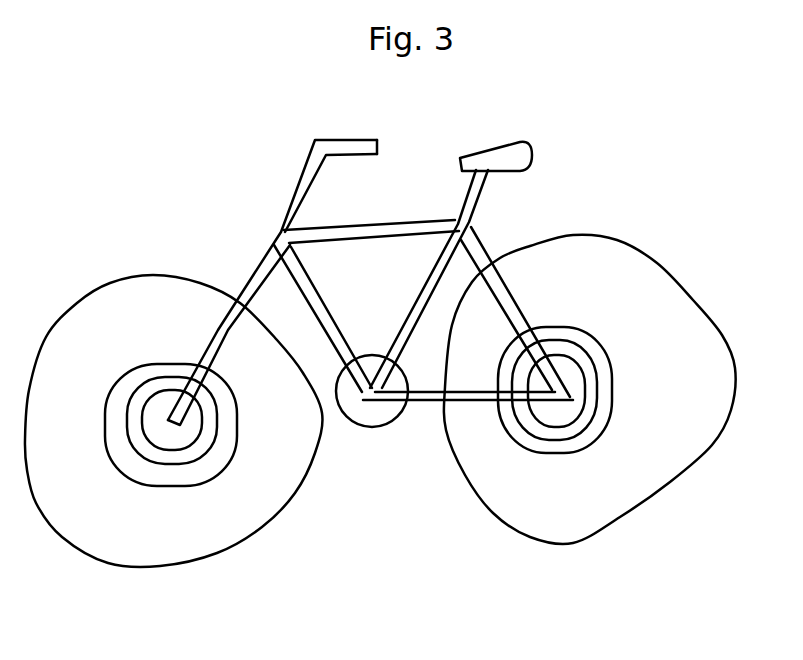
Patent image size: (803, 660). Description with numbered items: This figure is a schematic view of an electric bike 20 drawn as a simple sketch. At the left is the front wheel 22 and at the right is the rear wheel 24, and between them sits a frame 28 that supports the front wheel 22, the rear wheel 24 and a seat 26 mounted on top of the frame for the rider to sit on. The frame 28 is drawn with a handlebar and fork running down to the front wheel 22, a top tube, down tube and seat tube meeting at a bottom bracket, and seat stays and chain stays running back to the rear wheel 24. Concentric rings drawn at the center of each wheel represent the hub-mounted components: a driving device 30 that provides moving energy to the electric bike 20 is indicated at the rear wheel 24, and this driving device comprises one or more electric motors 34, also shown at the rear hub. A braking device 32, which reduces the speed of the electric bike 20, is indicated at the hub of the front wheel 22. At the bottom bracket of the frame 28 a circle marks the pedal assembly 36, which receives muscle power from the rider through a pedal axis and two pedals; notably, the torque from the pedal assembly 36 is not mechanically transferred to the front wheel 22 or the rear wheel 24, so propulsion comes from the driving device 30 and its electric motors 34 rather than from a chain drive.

The electric bike 20 is at (645, 98).
The front wheel 22 is at (192, 557).
The rear wheel 24 is at (602, 530).
The seat 26 is at (500, 145).
The frame 28 is at (332, 358).
The driving device 30 is at (583, 350).
The braking device 32 is at (166, 465).
The electric motor 34 is at (540, 415).
The pedal assembly 36 is at (377, 428).